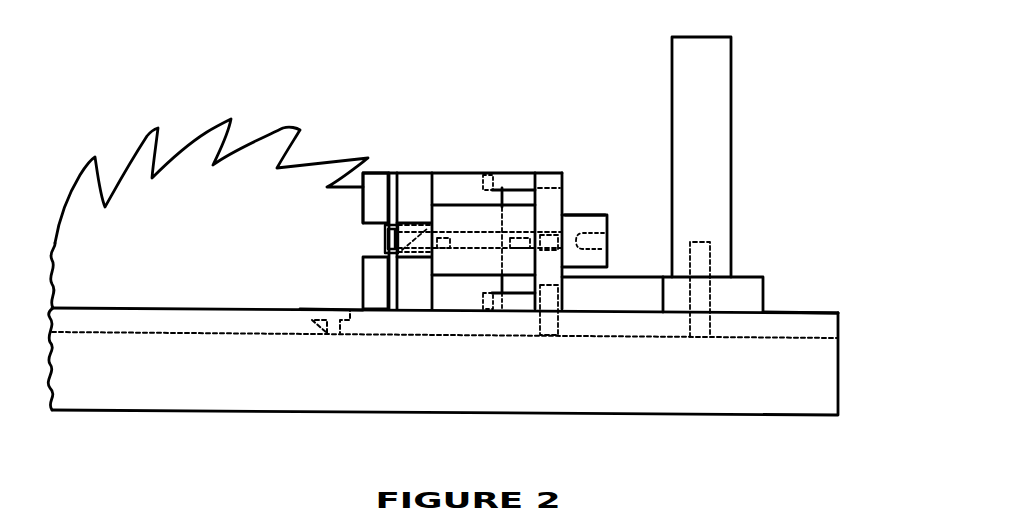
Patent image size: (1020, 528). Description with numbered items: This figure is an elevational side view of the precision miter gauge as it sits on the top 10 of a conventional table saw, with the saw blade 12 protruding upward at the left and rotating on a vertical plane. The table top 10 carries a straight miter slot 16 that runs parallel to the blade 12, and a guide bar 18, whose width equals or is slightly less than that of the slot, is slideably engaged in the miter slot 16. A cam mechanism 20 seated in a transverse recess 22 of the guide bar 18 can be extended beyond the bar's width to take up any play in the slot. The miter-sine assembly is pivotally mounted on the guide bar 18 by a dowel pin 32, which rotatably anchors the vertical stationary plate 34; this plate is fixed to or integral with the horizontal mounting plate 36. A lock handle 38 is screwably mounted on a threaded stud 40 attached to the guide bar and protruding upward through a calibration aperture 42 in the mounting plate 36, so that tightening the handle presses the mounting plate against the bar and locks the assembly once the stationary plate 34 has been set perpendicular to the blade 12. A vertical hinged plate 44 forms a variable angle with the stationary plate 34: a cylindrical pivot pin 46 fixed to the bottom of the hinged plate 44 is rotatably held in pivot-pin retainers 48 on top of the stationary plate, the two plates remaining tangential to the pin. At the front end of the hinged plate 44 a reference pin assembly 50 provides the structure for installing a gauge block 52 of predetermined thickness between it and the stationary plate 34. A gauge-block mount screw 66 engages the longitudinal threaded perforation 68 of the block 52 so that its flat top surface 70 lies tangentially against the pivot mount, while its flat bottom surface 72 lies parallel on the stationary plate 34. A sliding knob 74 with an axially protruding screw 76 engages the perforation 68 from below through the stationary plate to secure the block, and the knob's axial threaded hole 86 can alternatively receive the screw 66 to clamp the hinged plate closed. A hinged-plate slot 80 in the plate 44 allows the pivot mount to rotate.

The table top 10 is at (443, 329).
The blade 12 is at (230, 118).
The miter slot 16 is at (798, 335).
The guide bar 18 is at (765, 313).
The cam mechanism 20 is at (338, 307).
The transverse recess 22 is at (330, 306).
The dowel pin 32 is at (560, 322).
The stationary plate 34 is at (548, 172).
The mounting plate 36 is at (767, 297).
The lock handle 38 is at (700, 36).
The threaded stud 40 is at (710, 327).
The calibration aperture 42 is at (723, 297).
The hinged plate 44 is at (380, 169).
The pivot pin 46 is at (498, 180).
The pivot-pin retainer 48 is at (512, 178).
The reference pin assembly 50 is at (410, 170).
The gauge block 52 is at (467, 213).
The gauge-block mount screw 66 is at (407, 258).
The threaded perforation 68 is at (455, 252).
The top surface 70 is at (440, 168).
The bottom surface 72 is at (538, 218).
The sliding knob 74 is at (600, 212).
The screw 76 is at (512, 295).
The hinged-plate slot 80 is at (380, 253).
The axial threaded hole 86 is at (603, 228).